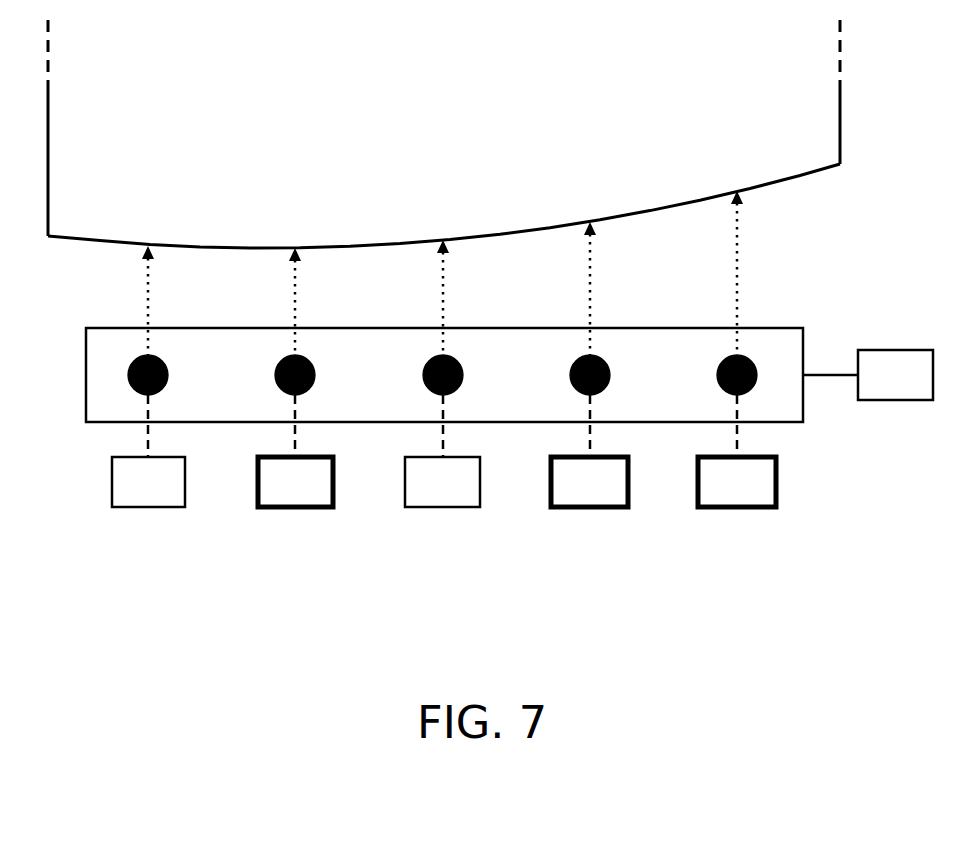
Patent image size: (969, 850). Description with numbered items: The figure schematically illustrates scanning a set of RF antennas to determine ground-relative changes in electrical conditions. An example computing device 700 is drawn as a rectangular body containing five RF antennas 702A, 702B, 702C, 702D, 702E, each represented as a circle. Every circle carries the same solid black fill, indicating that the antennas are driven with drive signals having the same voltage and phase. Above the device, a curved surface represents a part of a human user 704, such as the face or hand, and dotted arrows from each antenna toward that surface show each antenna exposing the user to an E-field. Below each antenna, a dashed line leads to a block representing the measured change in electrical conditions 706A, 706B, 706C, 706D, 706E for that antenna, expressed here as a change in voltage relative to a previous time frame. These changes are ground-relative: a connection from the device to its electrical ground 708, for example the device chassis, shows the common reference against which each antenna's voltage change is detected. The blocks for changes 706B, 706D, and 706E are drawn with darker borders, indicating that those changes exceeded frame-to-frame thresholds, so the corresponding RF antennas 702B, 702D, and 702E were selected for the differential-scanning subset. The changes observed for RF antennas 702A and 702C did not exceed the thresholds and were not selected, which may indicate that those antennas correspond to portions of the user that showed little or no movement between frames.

The computing device 700 is at (86, 378).
The RF antenna 702A is at (168, 375).
The RF antenna 702B is at (275, 376).
The RF antenna 702C is at (423, 376).
The RF antenna 702D is at (570, 376).
The RF antenna 702E is at (717, 376).
The human user 704 is at (88, 244).
The change in electrical conditions 706A is at (112, 482).
The change in electrical conditions 706B is at (258, 482).
The change in electrical conditions 706C is at (405, 482).
The change in electrical conditions 706D is at (551, 482).
The change in electrical conditions 706E is at (698, 482).
The electrical ground 708 is at (898, 402).